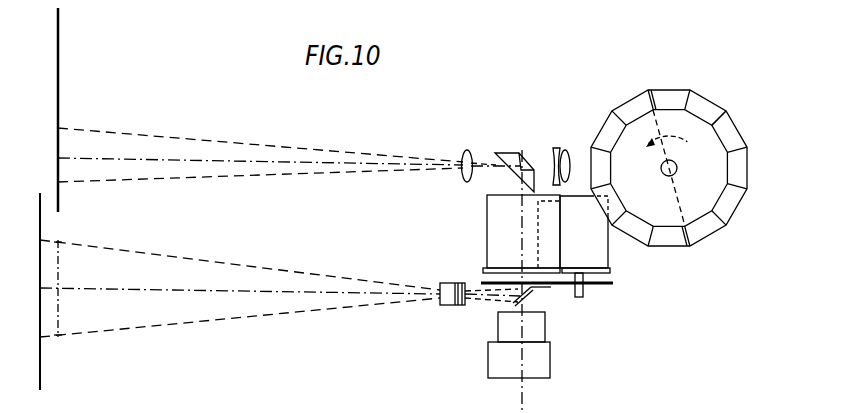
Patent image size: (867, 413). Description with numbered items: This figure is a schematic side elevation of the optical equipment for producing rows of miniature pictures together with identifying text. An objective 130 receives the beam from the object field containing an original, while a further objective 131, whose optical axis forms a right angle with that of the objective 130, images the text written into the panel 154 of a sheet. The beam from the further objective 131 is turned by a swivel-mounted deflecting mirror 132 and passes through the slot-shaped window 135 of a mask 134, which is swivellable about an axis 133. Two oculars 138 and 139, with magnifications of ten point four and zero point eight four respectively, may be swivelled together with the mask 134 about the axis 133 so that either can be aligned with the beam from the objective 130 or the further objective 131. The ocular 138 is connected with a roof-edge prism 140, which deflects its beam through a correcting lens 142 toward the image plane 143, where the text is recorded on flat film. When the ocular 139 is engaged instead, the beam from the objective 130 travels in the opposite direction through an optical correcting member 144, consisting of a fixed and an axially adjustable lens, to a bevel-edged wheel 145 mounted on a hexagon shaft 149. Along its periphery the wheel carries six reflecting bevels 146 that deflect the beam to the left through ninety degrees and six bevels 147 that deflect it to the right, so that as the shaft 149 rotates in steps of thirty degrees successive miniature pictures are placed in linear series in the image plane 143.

The objective 130 is at (543, 360).
The further objective 131 is at (440, 306).
The deflecting mirror 132 is at (522, 300).
The axis 133 is at (583, 294).
The mask 134 is at (611, 285).
The slot-shaped window 135 is at (515, 280).
The ocular 138 is at (497, 229).
The ocular 139 is at (600, 251).
The roof-edge prism 140 is at (511, 156).
The correcting lens 142 is at (461, 160).
The image plane 143 is at (60, 63).
The optical correcting member 144 is at (568, 150).
The bevel-edged wheel 145 is at (745, 208).
The reflecting bevels 146 is at (618, 112).
The bevels 147 is at (712, 112).
The hexagon shaft 149 is at (677, 218).
The panel 154 is at (58, 268).